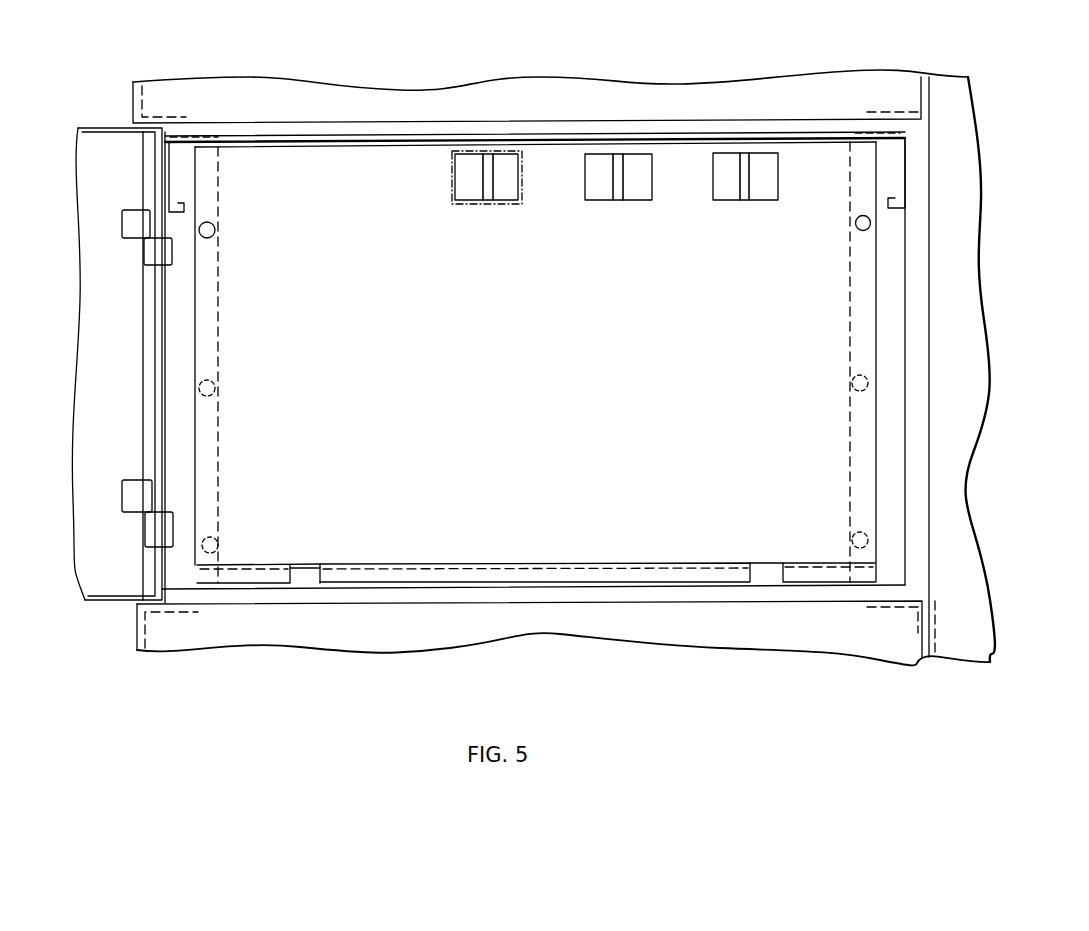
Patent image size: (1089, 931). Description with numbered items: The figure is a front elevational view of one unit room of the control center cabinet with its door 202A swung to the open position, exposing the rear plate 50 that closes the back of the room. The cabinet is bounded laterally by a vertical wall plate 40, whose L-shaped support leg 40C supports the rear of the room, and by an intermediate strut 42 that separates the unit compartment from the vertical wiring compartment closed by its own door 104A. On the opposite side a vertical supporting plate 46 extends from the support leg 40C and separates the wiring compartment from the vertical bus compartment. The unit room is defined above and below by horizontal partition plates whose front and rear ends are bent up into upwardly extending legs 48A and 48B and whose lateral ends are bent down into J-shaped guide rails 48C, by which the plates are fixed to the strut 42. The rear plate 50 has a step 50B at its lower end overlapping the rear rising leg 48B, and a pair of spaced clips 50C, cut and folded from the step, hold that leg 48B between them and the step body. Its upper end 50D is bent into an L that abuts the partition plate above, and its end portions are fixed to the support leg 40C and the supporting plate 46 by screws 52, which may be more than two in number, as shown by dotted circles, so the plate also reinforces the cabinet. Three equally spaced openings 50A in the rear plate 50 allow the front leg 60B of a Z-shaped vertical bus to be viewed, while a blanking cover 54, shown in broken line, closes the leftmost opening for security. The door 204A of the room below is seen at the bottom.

The vertical wall plate 40 is at (136, 636).
The L-shaped support leg 40C is at (222, 470).
The intermediate strut 42 is at (917, 272).
The vertical supporting plate 46 is at (848, 315).
The upwardly extending leg 48A is at (376, 135).
The upwardly extending leg 48B is at (308, 572).
The J-shaped guide rail 48C is at (180, 205).
The rear plate 50 is at (567, 385).
The opening 50A is at (514, 177).
The step 50B is at (527, 572).
The clip 50C is at (764, 572).
The upper end 50D is at (352, 148).
The screw 52 is at (216, 232).
The blanking cover 54 is at (450, 177).
The front leg 60B is at (480, 178).
The door 104A is at (963, 366).
The door 202A is at (98, 128).
The door 204A is at (576, 630).